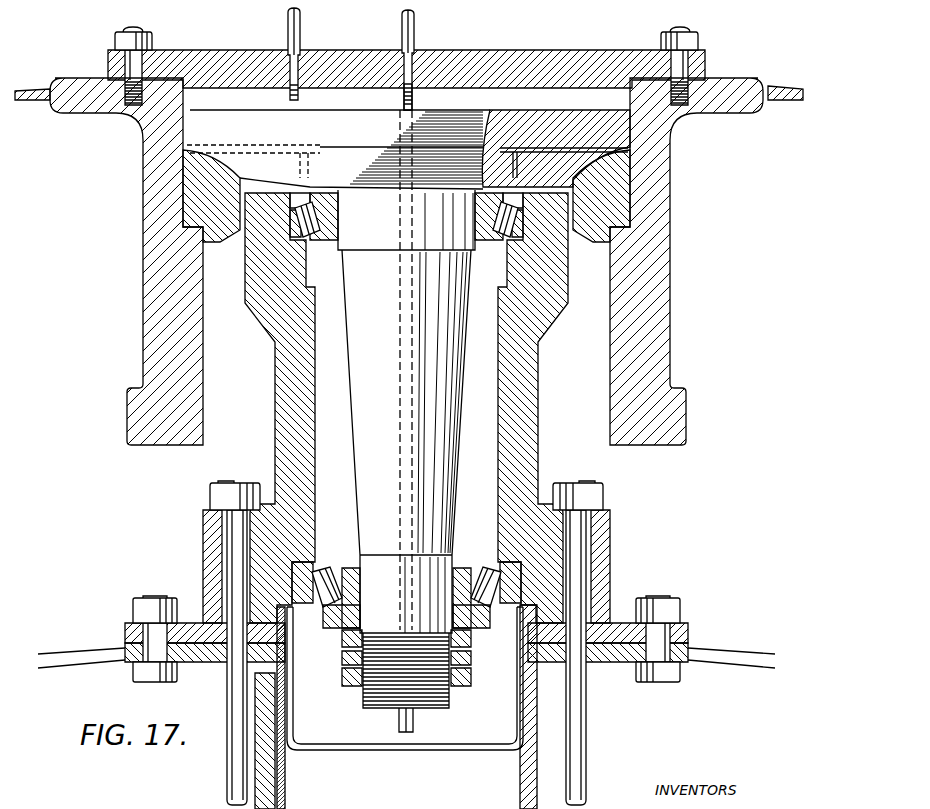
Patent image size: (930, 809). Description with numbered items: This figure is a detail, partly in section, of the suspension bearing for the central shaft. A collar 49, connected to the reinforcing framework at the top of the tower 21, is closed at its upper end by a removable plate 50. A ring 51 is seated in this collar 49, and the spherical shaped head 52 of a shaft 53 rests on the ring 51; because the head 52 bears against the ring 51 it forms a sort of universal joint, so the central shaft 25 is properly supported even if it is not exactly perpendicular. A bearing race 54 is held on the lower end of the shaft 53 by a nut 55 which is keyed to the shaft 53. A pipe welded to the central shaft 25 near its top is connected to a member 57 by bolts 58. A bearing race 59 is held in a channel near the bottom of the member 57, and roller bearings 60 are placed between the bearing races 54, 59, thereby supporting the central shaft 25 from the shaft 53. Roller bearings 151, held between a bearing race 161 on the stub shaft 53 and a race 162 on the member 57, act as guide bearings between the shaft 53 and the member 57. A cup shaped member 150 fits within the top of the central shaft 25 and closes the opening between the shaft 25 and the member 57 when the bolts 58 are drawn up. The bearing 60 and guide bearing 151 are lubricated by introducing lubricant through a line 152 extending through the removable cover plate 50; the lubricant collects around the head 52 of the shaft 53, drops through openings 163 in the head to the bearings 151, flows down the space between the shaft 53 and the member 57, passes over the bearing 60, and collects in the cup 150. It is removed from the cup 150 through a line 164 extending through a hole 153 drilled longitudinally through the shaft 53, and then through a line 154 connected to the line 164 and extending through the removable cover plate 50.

The tower 21 is at (783, 87).
The central shaft 25 is at (284, 796).
The collar 49 is at (670, 321).
The removable plate 50 is at (493, 50).
The ring 51 is at (612, 186).
The head 52 is at (378, 121).
The shaft 53 is at (439, 462).
The bearing race 54 is at (470, 563).
The nut 55 is at (364, 688).
The member 57 is at (540, 405).
The bolts 58 is at (225, 563).
The bearing race 59 is at (328, 563).
The roller bearings 60 is at (488, 606).
The cup shaped member 150 is at (370, 750).
The roller bearings 151 is at (296, 212).
The line 152 is at (288, 23).
The hole 153 is at (401, 394).
The line 154 is at (402, 25).
The bearing race 161 is at (335, 243).
The race 162 is at (509, 239).
The openings 163 is at (578, 150).
The line 164 is at (414, 100).